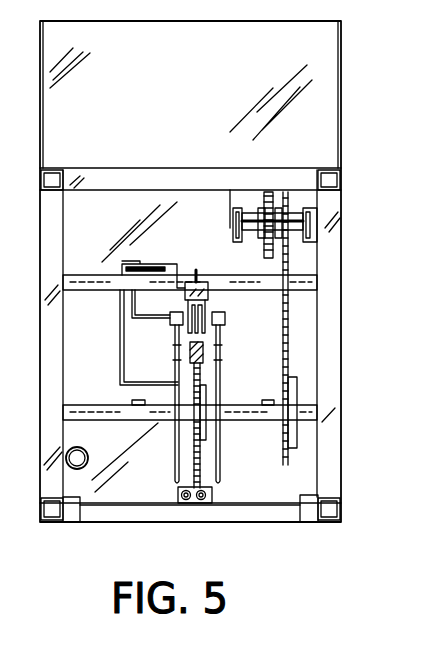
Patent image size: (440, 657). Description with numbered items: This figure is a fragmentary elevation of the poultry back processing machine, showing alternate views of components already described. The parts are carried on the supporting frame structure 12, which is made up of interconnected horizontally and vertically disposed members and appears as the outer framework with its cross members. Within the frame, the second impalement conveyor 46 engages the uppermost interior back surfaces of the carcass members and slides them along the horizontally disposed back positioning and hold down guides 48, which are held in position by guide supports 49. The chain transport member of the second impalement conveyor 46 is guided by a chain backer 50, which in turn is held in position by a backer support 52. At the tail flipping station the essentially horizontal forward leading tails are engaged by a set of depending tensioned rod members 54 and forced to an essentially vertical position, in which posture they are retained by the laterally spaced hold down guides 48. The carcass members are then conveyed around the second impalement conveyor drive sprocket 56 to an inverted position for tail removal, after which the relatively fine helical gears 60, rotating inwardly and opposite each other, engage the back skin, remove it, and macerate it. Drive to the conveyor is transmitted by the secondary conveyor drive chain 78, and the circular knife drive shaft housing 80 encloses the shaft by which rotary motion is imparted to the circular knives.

The supporting frame structure 12 is at (345, 471).
The second impalement conveyor 46 is at (176, 343).
The back positioning and hold down guides 48 is at (176, 358).
The guide supports 49 is at (138, 318).
The chain backer 50 is at (205, 352).
The backer support 52 is at (120, 345).
The depending tensioned rod members 54 is at (210, 310).
The second impalement conveyor drive sprocket 56 is at (199, 461).
The fine helical gears 60 is at (180, 496).
The secondary conveyor drive chain 78 is at (290, 318).
The circular knife drive shaft housing 80 is at (86, 450).